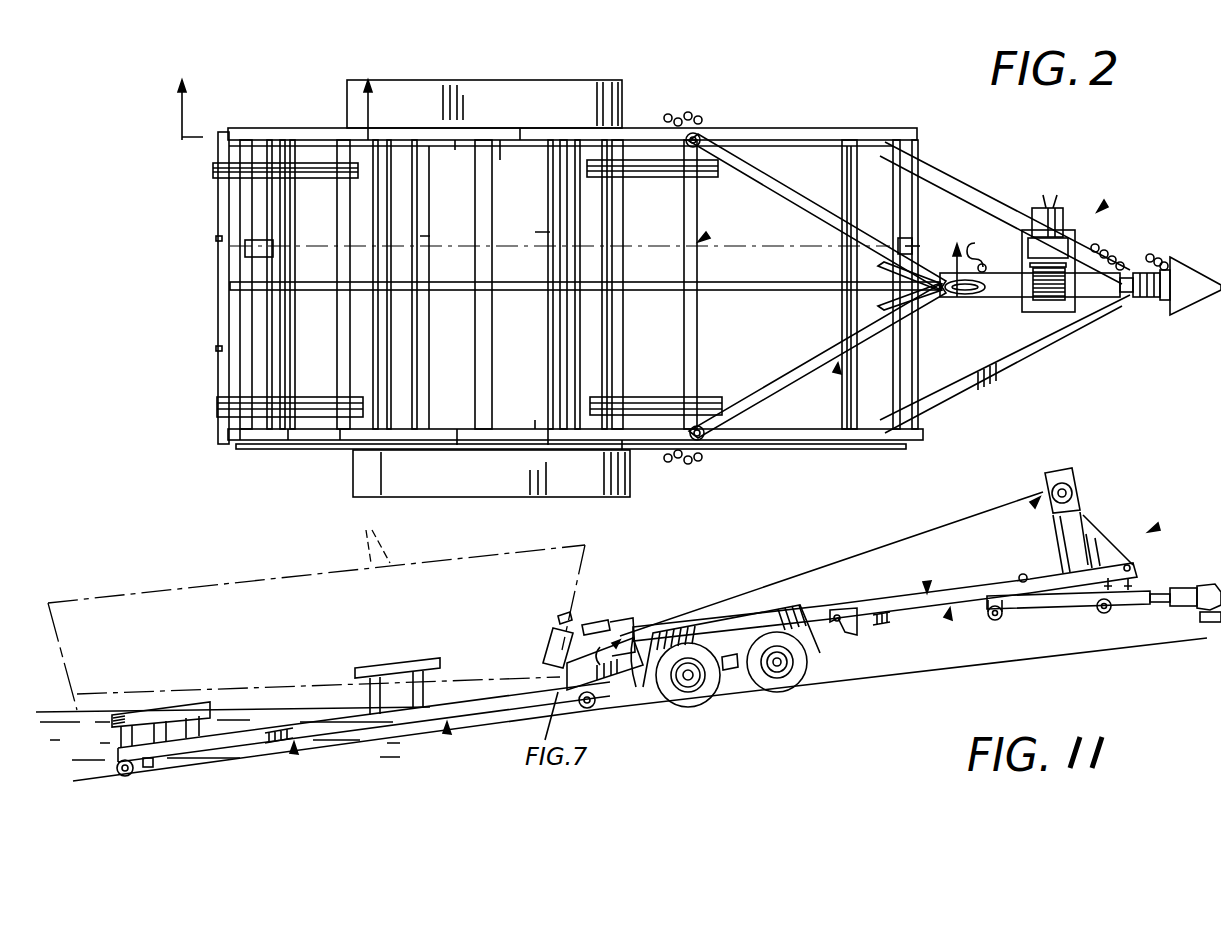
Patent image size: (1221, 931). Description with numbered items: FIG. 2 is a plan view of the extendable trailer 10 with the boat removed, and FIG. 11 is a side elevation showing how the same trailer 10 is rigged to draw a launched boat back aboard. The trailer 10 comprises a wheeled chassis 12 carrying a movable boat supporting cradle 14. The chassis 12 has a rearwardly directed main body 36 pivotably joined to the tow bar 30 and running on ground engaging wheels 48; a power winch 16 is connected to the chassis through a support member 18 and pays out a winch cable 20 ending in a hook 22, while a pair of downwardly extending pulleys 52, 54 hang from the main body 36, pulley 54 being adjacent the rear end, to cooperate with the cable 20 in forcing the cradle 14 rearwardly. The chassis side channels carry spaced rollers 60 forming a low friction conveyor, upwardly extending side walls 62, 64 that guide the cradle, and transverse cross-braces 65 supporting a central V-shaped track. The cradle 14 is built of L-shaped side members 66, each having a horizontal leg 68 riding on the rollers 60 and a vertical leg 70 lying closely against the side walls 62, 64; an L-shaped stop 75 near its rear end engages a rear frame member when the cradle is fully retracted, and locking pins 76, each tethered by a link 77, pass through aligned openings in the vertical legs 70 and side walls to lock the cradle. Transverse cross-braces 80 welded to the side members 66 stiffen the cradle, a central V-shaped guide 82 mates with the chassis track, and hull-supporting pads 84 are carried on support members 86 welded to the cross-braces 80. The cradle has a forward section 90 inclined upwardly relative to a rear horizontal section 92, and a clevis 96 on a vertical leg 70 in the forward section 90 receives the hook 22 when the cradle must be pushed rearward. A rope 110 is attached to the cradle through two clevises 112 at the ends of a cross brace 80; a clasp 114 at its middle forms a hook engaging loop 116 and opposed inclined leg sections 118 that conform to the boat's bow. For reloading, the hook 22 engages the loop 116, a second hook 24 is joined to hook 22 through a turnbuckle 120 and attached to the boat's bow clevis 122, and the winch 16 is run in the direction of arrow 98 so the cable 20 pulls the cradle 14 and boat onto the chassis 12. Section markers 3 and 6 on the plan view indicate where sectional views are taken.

In FIG. 2, the extendable trailer 10 is at (1103, 205).
In FIG. 11, the extendable trailer 10 is at (1153, 527).
In FIG. 2, the wheeled chassis 12 is at (857, 450).
In FIG. 11, the wheeled chassis 12 is at (928, 588).
In FIG. 2, the boat supporting cradle 14 is at (702, 238).
In FIG. 11, the boat supporting cradle 14 is at (447, 725).
In FIG. 2, the power winch 16 is at (1037, 312).
In FIG. 11, the power winch 16 is at (1074, 483).
In FIG. 11, the support member 18 is at (1083, 521).
In FIG. 2, the winch cable 20 is at (1030, 262).
In FIG. 11, the winch cable 20 is at (938, 523).
In FIG. 2, the hook 22 is at (978, 242).
In FIG. 11, the hook 22 is at (634, 640).
In FIG. 11, the second hook 24 is at (583, 618).
In FIG. 11, the tow bar 30 is at (1067, 597).
In FIG. 11, the main body 36 is at (949, 612).
In FIG. 11, the ground engaging wheels 48 is at (776, 691).
In FIG. 2, the pulley 52 is at (920, 246).
In FIG. 2, the pulley 54 is at (245, 248).
In FIG. 11, the rollers 60 is at (900, 607).
In FIG. 2, the side wall 62 is at (632, 120).
In FIG. 2, the side wall 64 is at (527, 450).
In FIG. 2, the cross-braces 65 is at (421, 237).
In FIG. 2, the side members 66 is at (500, 152).
In FIG. 2, the horizontal leg 68 is at (455, 140).
In FIG. 2, the vertical leg 70 is at (526, 130).
In FIG. 11, the L-shaped stop 75 is at (152, 765).
In FIG. 2, the locking pins 76 is at (696, 123).
In FIG. 2, the link 77 is at (665, 118).
In FIG. 2, the cross-braces 80 is at (230, 350).
In FIG. 2, the V-shaped guide 82 is at (717, 293).
In FIG. 2, the hull-supporting pads 84 is at (213, 170).
In FIG. 2, the support members 86 is at (222, 422).
In FIG. 11, the forward section 90 is at (523, 693).
In FIG. 11, the rear horizontal section 92 is at (294, 746).
In FIG. 11, the clevis 96 is at (533, 670).
In FIG. 11, the arrow 98 is at (1036, 503).
In FIG. 2, the rope 110 is at (838, 366).
In FIG. 2, the clevises 112 is at (702, 142).
In FIG. 2, the clasp 114 is at (946, 297).
In FIG. 2, the hook engaging loop 116 is at (982, 296).
In FIG. 11, the hook engaging loop 116 is at (620, 630).
In FIG. 2, the inclined leg sections 118 is at (810, 197).
In FIG. 11, the turnbuckle 120 is at (612, 620).
In FIG. 11, the clevis 122 is at (567, 613).
In FIG. 2, the section line 3 is at (956, 259).
In FIG. 2, the section line 6 is at (274, 94).